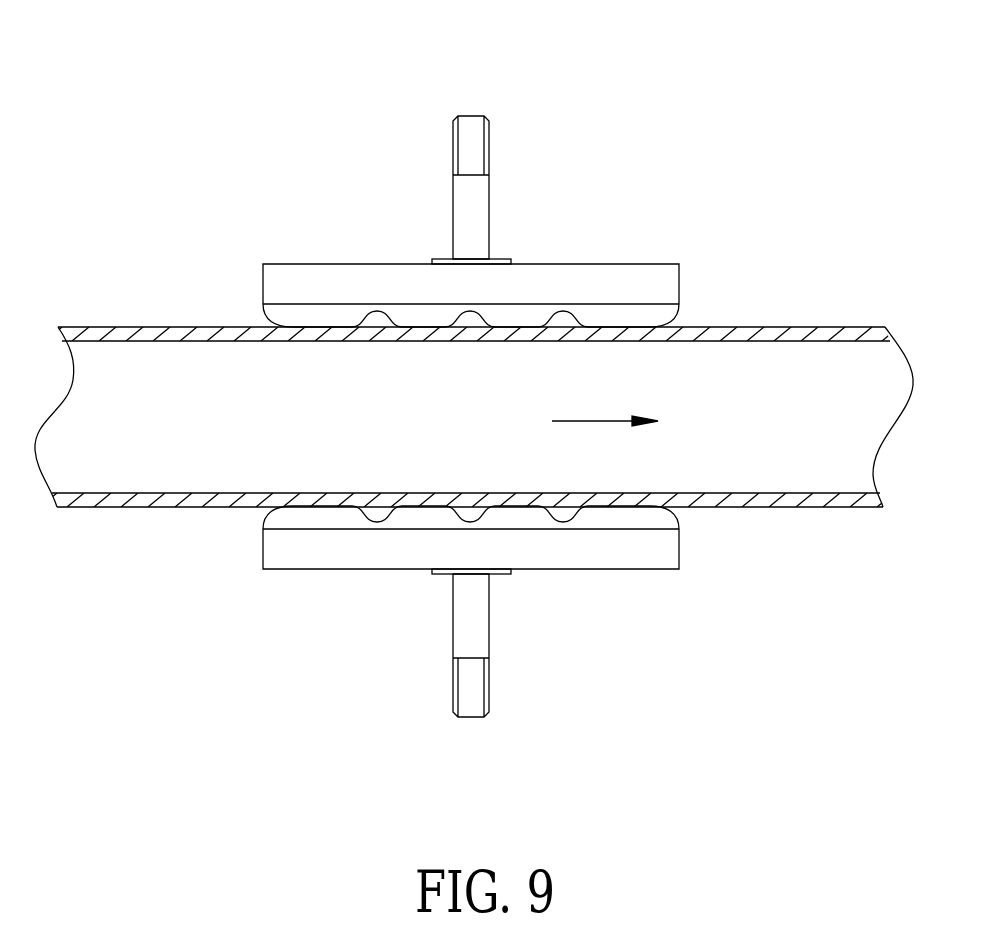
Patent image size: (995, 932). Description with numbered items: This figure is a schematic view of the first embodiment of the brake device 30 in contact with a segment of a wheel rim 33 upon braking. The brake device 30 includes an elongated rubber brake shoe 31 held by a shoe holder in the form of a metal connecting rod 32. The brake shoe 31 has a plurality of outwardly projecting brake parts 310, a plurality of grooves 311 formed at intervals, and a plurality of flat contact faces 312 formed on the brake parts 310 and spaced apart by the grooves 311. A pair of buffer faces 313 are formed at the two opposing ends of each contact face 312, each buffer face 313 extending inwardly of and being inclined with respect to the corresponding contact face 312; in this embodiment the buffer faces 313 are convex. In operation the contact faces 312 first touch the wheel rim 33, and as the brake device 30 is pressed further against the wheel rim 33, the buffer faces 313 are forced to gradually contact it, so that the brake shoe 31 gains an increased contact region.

The brake device 30 is at (550, 391).
The rubber brake shoe 31 is at (550, 404).
The metal connecting rod 32 is at (483, 140).
The wheel rim 33 is at (805, 365).
The brake parts 310 is at (632, 518).
The grooves 311 is at (568, 313).
The flat contact faces 312 is at (323, 327).
The buffer faces 313 is at (405, 316).